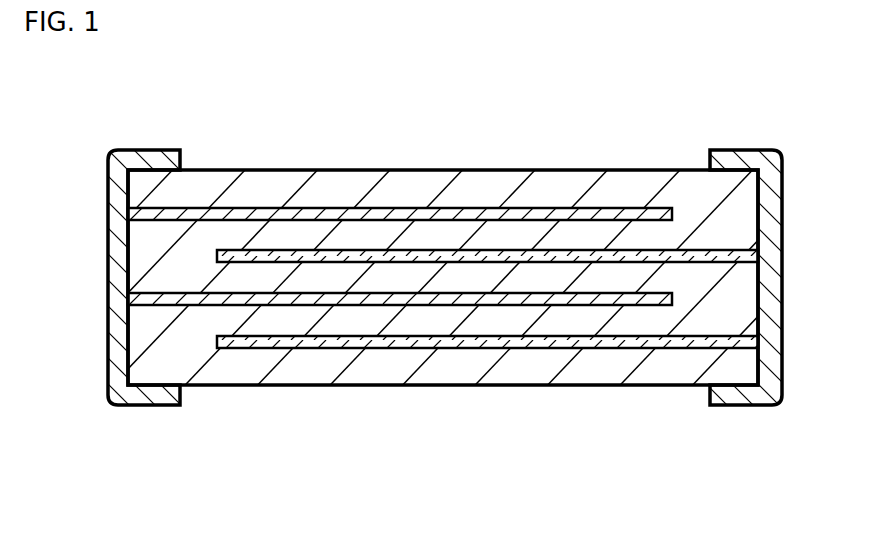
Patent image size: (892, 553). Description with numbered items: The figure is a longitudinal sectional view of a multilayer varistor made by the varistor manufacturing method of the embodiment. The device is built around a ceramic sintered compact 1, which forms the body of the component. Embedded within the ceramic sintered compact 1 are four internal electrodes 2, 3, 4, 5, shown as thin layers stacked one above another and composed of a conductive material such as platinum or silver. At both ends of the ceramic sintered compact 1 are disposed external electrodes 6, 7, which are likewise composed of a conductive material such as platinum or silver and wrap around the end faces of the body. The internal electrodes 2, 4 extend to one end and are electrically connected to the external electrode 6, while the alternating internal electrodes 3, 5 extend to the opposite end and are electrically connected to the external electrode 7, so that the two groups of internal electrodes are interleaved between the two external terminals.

The ceramic sintered compact 1 is at (503, 169).
The internal electrode 2 is at (674, 208).
The internal electrode 3 is at (737, 244).
The internal electrode 4 is at (674, 293).
The internal electrode 5 is at (737, 331).
The external electrode 6 is at (150, 405).
The external electrode 7 is at (750, 405).